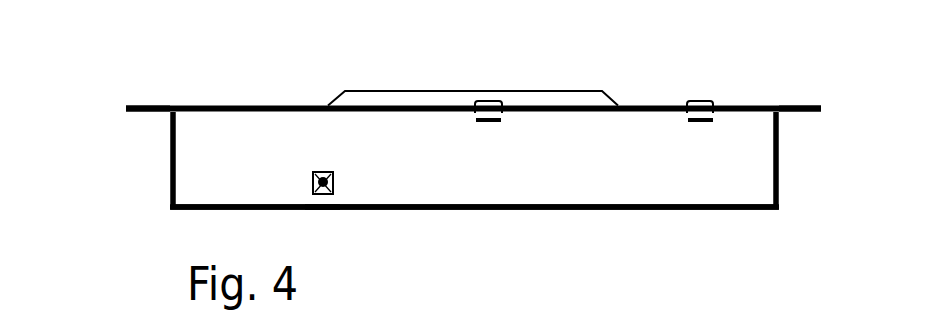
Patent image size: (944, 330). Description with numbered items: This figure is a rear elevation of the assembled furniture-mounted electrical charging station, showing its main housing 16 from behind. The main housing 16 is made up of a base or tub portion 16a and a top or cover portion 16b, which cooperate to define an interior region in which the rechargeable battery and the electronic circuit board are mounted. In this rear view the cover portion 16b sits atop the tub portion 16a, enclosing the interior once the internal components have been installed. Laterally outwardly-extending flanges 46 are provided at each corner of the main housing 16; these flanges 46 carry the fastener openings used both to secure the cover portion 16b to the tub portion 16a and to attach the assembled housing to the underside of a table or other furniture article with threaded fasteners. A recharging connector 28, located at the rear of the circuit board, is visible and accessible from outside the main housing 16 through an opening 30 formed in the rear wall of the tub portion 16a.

The main housing 16 is at (169, 141).
The tub portion 16a is at (170, 182).
The cover portion 16b is at (143, 105).
The flange 46 is at (140, 118).
The recharging connector 28 is at (335, 190).
The opening 30 is at (320, 198).